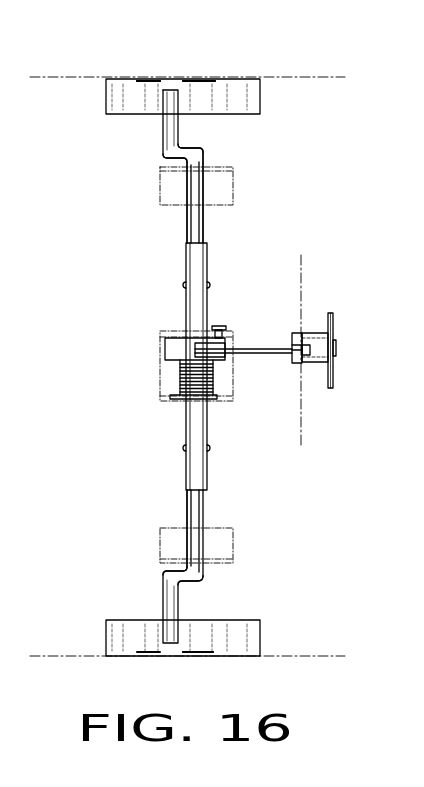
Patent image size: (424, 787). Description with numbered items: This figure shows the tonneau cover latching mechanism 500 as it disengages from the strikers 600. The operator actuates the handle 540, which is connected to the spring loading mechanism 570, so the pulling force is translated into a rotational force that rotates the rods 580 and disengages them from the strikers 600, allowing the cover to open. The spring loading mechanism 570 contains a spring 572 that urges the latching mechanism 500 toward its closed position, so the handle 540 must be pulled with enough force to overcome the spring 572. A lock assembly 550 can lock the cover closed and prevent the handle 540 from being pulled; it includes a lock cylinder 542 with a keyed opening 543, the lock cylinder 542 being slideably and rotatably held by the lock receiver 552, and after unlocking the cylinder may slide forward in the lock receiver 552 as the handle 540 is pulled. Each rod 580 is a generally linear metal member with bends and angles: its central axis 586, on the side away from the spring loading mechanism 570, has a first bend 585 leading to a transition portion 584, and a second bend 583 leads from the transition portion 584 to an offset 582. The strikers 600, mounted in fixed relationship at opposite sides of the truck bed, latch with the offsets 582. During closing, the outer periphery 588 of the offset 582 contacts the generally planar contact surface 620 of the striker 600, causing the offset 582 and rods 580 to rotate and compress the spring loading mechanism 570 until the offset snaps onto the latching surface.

The latching mechanism 500 is at (303, 194).
The handle 540 is at (330, 323).
The lock cylinder 542 is at (313, 363).
The keyed opening 543 is at (336, 350).
The lock assembly 550 is at (313, 290).
The lock receiver 552 is at (290, 357).
The spring loading mechanism 570 is at (160, 384).
The spring 572 is at (177, 368).
The rods 580 is at (203, 218).
The offset 582 is at (163, 123).
The second bend 583 is at (180, 147).
The transition portion 584 is at (177, 152).
The first bend 585 is at (200, 155).
The central axis 586 is at (186, 237).
The outer periphery 588 is at (163, 100).
The strikers 600 is at (260, 92).
The contact surface 620 is at (198, 97).